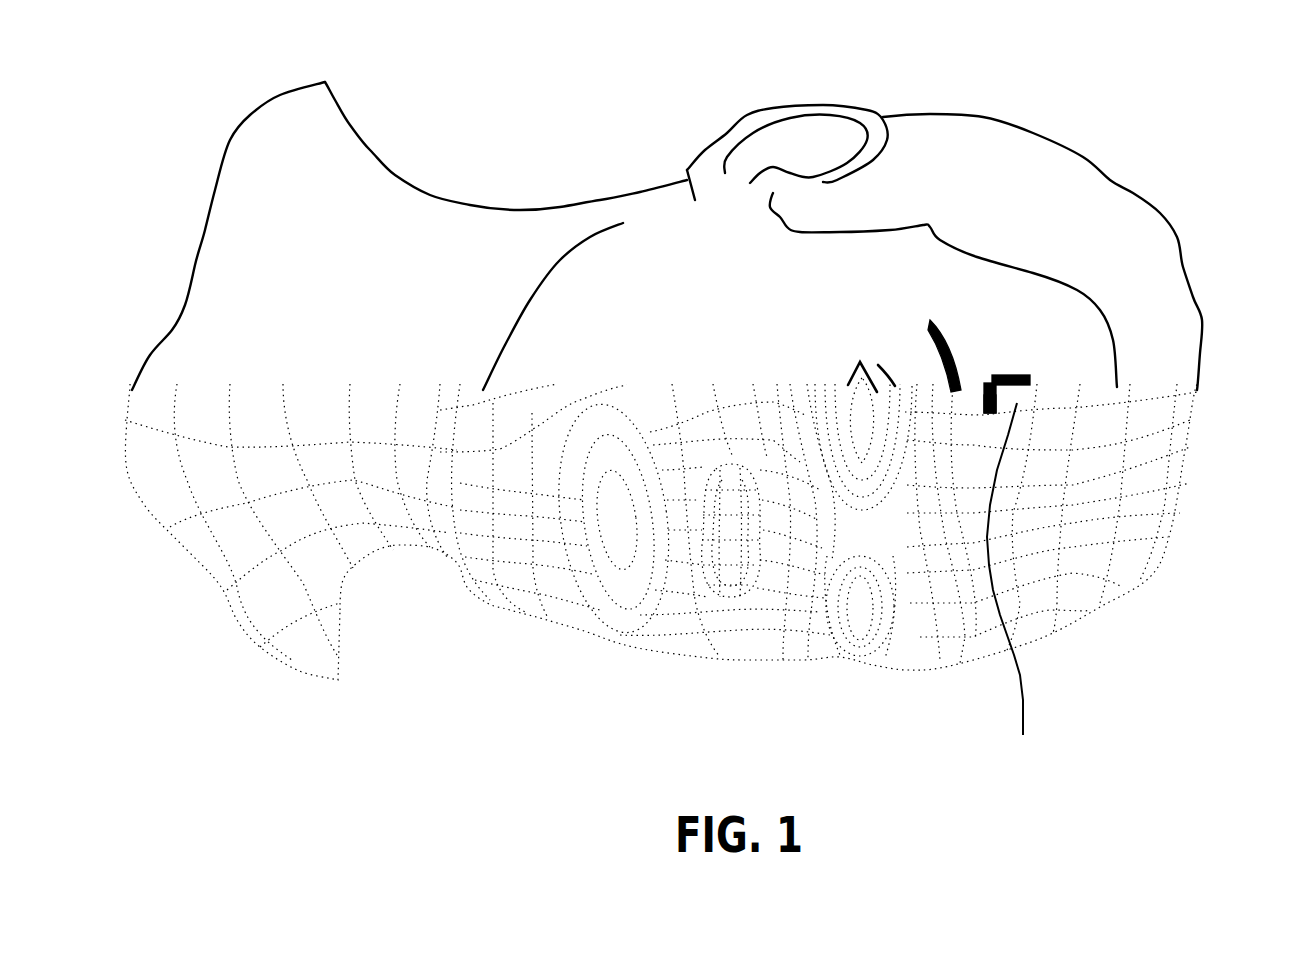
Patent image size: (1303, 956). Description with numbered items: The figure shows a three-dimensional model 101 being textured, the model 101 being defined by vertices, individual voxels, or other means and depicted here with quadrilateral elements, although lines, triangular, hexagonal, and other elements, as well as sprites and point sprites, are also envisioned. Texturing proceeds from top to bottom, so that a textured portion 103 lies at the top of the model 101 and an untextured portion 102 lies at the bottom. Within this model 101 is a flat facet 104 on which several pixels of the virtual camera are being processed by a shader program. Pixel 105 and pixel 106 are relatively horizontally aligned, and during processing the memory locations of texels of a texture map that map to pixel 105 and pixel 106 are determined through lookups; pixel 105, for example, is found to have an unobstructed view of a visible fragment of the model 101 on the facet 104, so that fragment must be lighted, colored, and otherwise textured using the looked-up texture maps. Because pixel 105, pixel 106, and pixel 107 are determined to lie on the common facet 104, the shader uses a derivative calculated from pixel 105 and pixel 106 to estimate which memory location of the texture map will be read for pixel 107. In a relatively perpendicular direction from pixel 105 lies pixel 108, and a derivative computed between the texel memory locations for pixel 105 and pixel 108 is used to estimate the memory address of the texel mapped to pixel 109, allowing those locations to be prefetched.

The three-dimensional model 101 is at (702, 535).
The untextured portion 102 is at (1113, 600).
The textured portion 103 is at (1110, 180).
The facet 104 is at (1013, 586).
The pixel 105 is at (993, 377).
The pixel 106 is at (1008, 377).
The pixel 107 is at (1027, 377).
The pixel 108 is at (985, 390).
The pixel 109 is at (982, 410).